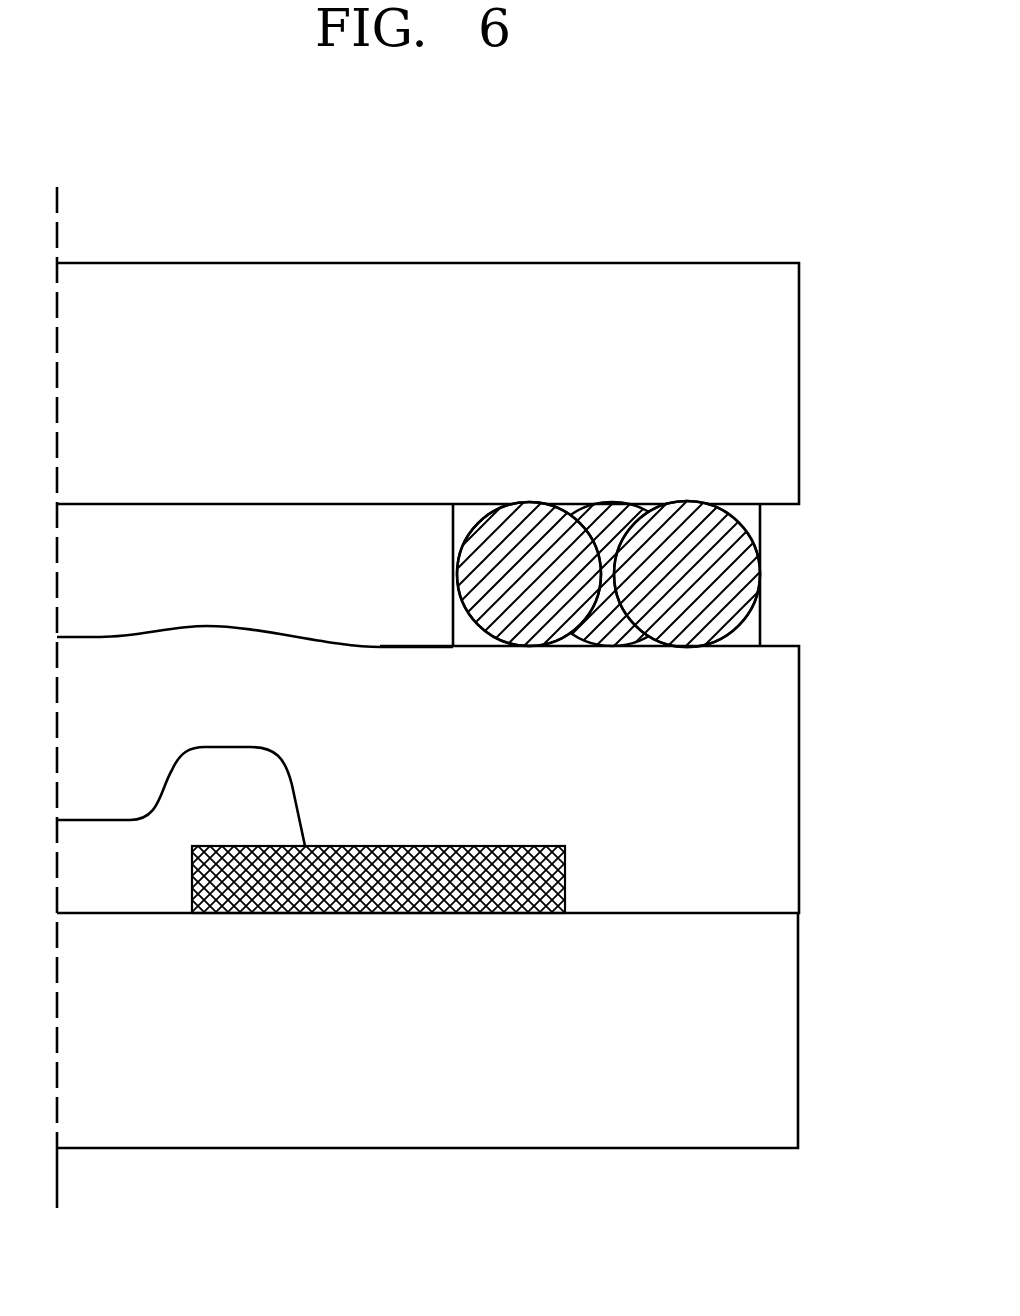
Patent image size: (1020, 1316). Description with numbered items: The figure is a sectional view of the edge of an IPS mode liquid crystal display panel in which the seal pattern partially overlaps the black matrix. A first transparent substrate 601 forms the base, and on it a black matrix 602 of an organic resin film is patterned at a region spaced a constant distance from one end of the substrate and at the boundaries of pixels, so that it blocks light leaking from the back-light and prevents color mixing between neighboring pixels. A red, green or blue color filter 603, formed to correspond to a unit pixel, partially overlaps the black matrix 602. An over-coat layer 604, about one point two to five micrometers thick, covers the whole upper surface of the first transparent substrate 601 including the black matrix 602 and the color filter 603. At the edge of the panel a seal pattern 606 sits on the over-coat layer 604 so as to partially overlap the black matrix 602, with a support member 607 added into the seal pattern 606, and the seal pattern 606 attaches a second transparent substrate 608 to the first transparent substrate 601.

The first transparent substrate 601 is at (772, 1080).
The black matrix 602 is at (527, 873).
The color filter 603 is at (110, 873).
The over-coat layer 604 is at (770, 818).
The seal pattern 606 is at (737, 637).
The support member 607 is at (755, 562).
The second transparent substrate 608 is at (738, 408).